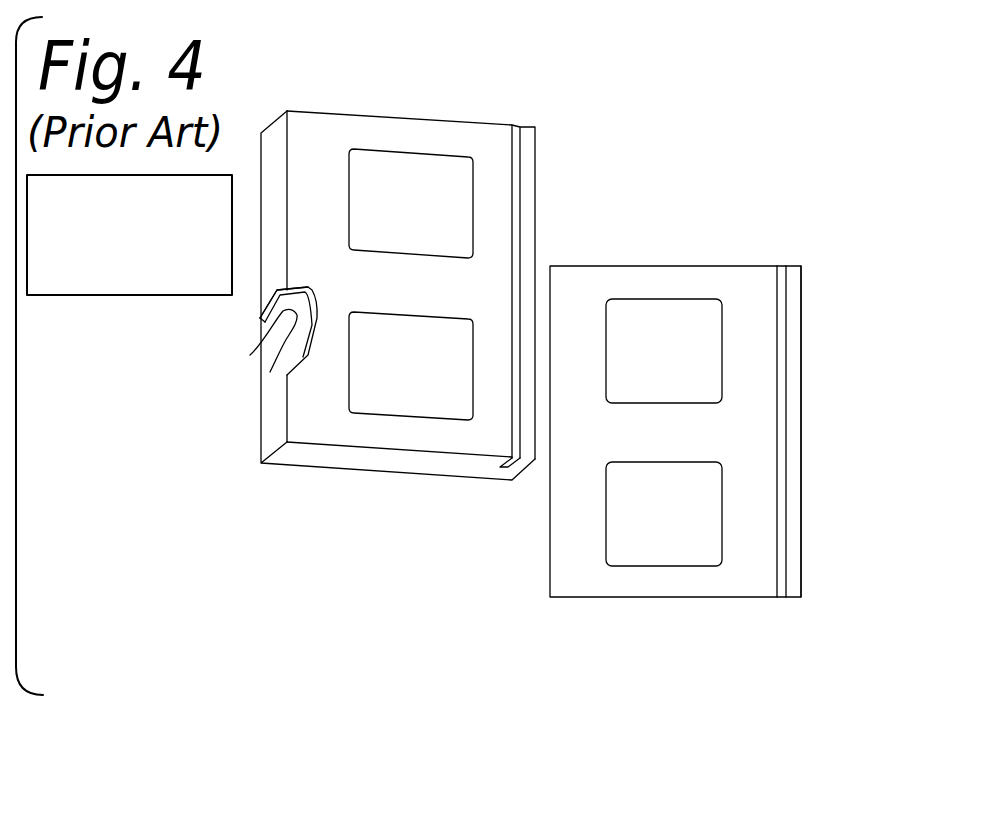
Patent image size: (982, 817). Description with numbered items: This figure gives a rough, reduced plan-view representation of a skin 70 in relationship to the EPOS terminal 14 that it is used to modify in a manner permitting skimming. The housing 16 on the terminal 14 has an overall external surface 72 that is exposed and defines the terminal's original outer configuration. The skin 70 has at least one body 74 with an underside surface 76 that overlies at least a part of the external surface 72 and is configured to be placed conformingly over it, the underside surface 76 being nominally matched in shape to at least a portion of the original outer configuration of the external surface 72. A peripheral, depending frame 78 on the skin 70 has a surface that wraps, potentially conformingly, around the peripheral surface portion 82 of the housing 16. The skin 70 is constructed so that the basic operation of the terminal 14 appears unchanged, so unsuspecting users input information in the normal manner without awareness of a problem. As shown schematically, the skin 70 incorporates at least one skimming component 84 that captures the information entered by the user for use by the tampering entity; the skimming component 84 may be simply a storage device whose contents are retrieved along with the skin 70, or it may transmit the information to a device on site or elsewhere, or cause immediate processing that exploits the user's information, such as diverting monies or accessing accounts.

The body 74 is at (393, 133).
The skimming component 84 is at (305, 236).
The peripheral, depending frame 78 is at (273, 283).
The peripheral surface portion 82 is at (250, 355).
The underside surface 76 is at (308, 355).
The skin 70 is at (372, 450).
The external surface 72 is at (747, 281).
The housing 16 is at (608, 293).
The terminal 14 is at (801, 553).